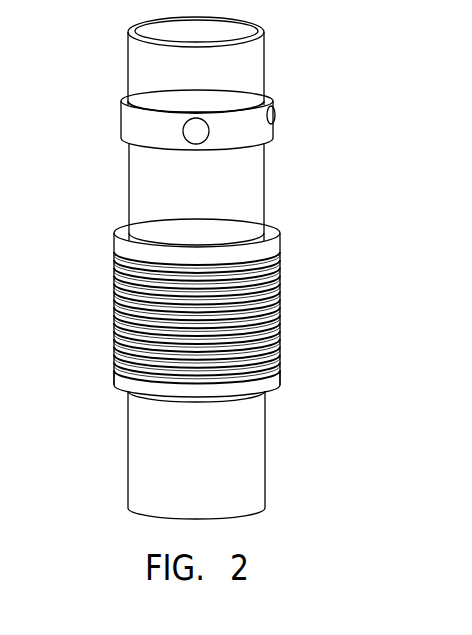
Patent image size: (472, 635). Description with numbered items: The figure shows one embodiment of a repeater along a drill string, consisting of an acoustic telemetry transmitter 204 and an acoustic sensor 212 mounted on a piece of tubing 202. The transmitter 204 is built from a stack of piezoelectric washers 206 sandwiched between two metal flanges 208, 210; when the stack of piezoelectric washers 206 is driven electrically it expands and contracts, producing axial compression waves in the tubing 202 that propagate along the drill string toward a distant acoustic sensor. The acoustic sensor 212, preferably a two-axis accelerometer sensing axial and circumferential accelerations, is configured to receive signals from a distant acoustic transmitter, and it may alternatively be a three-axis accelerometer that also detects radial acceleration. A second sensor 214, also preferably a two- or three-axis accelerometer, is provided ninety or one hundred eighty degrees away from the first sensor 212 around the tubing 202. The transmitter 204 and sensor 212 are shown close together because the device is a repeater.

The tubing 202 is at (265, 62).
The acoustic telemetry transmitter 204 is at (121, 318).
The stack of piezoelectric washers 206 is at (288, 250).
The metal flange 208 is at (281, 240).
The metal flange 210 is at (282, 373).
The acoustic sensor 212 is at (199, 134).
The second sensor 214 is at (275, 116).